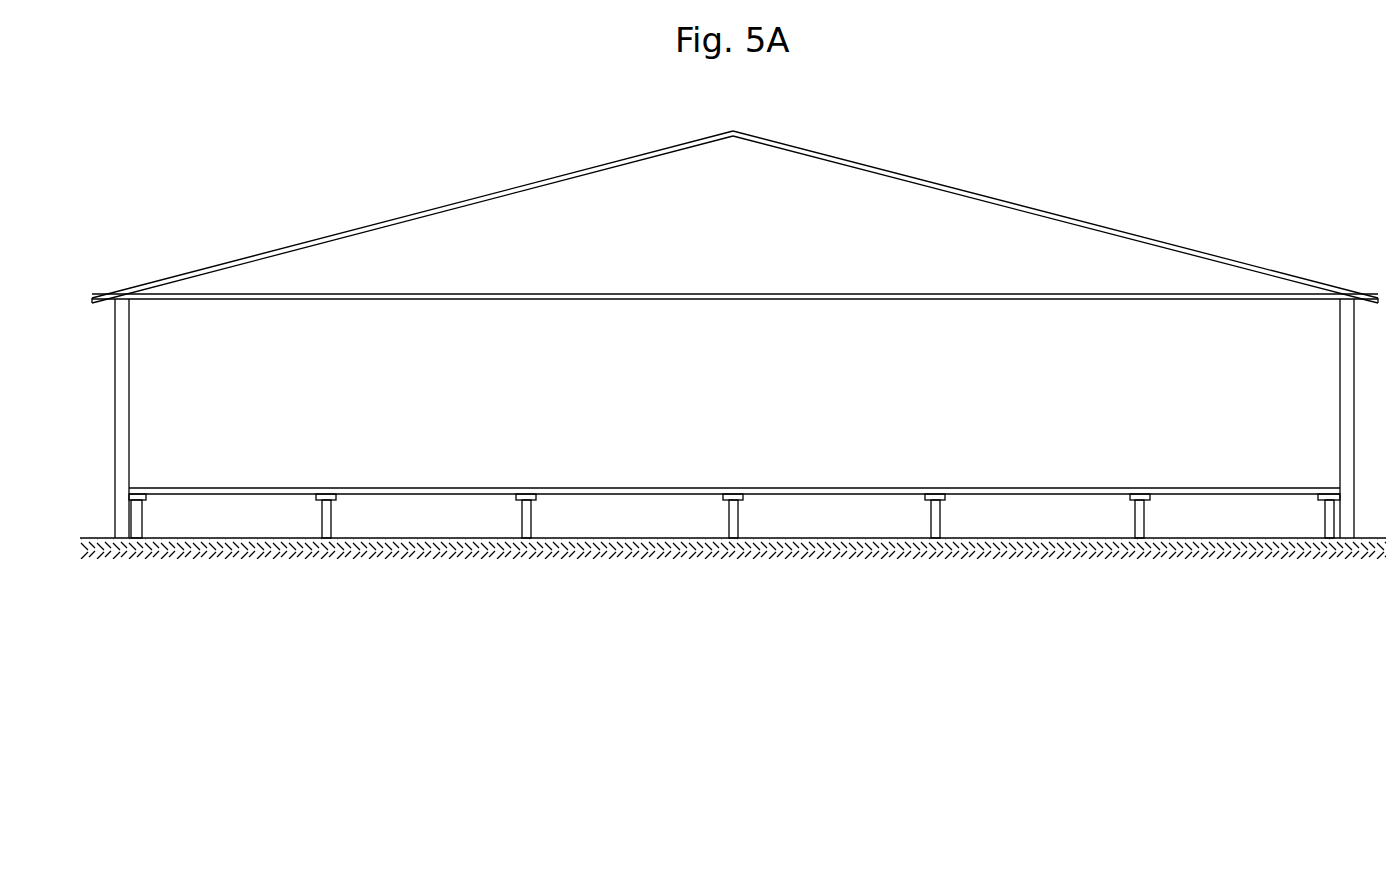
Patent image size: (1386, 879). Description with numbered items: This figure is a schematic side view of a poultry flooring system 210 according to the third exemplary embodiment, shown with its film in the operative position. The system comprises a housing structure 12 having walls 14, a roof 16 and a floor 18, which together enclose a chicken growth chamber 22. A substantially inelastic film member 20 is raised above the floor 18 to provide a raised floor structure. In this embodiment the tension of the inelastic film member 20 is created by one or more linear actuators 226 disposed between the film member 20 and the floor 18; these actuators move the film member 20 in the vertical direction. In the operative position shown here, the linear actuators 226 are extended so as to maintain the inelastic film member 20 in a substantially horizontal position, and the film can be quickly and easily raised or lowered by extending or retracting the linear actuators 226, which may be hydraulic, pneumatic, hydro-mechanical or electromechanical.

The poultry flooring system 210 is at (634, 589).
The housing structure 12 is at (994, 190).
The roof 16 is at (417, 209).
The chicken growth chamber 22 is at (800, 384).
The walls 14 is at (129, 388).
The inelastic film member 20 is at (652, 488).
The linear actuators 226 is at (331, 520).
The floor 18 is at (996, 538).